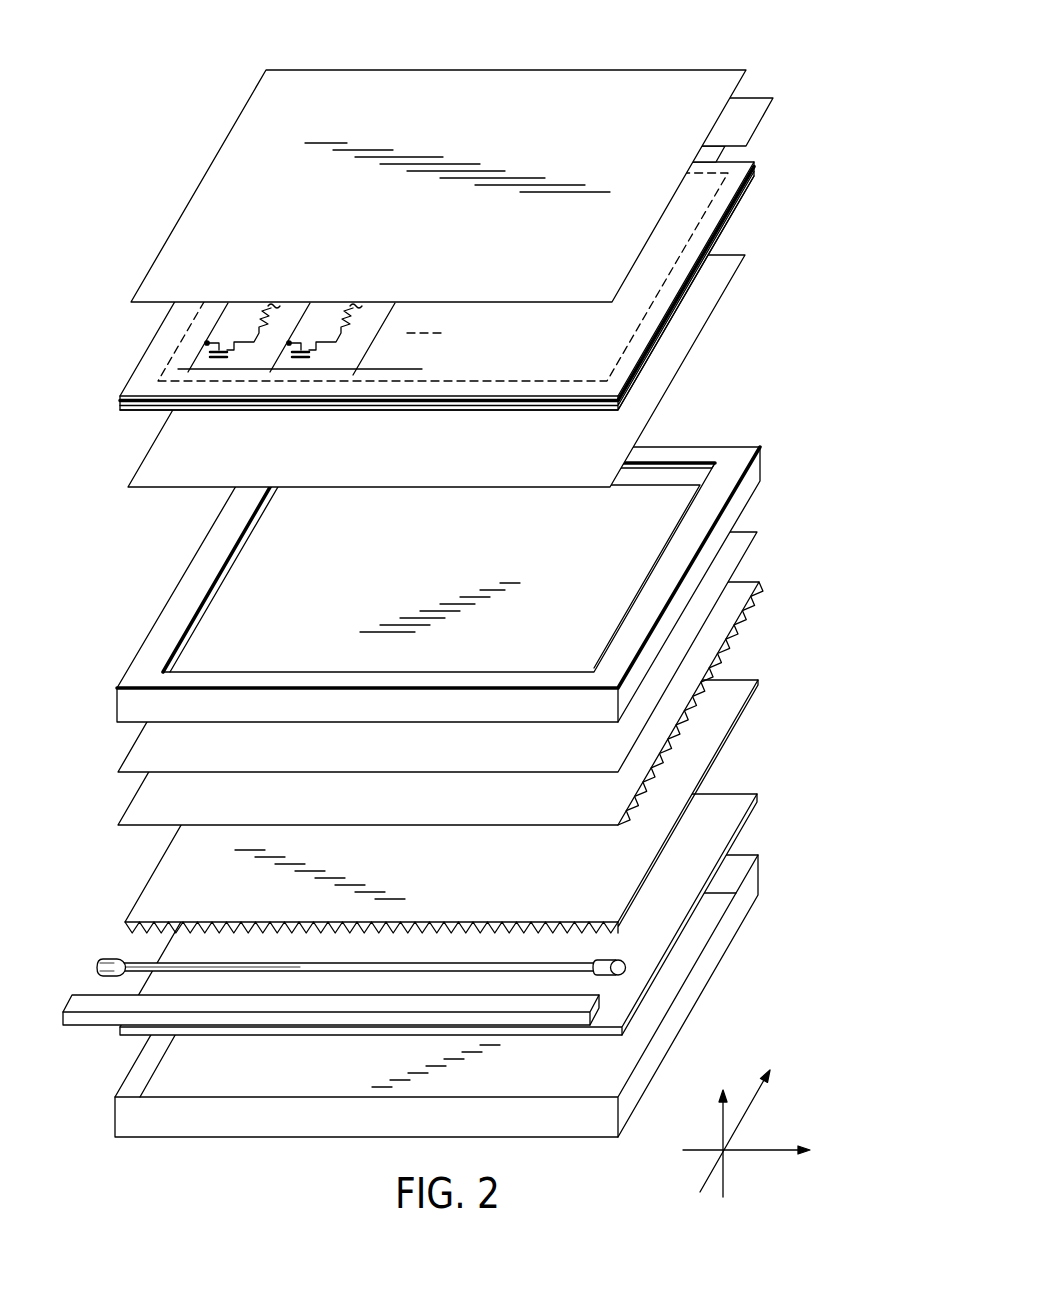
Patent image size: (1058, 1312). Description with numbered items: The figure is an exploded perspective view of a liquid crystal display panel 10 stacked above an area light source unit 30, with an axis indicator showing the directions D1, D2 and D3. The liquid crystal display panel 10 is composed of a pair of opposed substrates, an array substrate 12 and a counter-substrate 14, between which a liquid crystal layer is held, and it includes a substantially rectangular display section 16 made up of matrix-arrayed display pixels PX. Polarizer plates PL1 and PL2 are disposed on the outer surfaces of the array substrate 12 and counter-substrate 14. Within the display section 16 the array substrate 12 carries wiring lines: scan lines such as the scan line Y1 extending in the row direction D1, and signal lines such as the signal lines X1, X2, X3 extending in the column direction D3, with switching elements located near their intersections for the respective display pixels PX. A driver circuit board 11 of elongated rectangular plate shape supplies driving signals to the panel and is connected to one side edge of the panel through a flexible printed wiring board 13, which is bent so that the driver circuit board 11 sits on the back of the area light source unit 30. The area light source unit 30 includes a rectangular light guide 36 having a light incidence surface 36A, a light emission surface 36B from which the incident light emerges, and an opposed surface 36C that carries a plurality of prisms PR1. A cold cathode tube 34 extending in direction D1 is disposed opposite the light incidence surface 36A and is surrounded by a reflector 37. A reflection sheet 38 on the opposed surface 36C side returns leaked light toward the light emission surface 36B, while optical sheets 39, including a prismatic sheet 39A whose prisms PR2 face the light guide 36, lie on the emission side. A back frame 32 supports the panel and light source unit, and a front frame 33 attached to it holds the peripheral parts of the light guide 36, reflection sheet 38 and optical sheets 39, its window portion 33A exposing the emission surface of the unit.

The liquid crystal display panel 10 is at (468, 248).
The driver circuit board 11 is at (752, 98).
The array substrate 12 is at (130, 411).
The flexible printed wiring board 13 is at (713, 155).
The counter-substrate 14 is at (441, 317).
The display section 16 is at (712, 205).
The polarizer plate PL1 is at (665, 358).
The polarizer plate PL2 is at (535, 88).
The signal line X1 is at (215, 312).
The signal line X2 is at (298, 312).
The signal line X3 is at (382, 312).
The scan line Y1 is at (422, 368).
The display pixel PX is at (242, 352).
The area light source unit 30 is at (444, 770).
The back frame 32 is at (705, 962).
The front frame 33 is at (438, 562).
The window portion 33A is at (439, 537).
The cold cathode tube 34 is at (108, 959).
The light guide 36 is at (449, 881).
The light incidence surface 36A is at (371, 1002).
The light emission surface 36B is at (657, 817).
The opposed surface 36C is at (733, 737).
The reflector 37 is at (88, 1003).
The reflection sheet 38 is at (675, 903).
The optical sheets 39 is at (404, 682).
The prismatic sheet 39A is at (427, 703).
The prisms PR1 is at (578, 935).
The prisms PR2 is at (665, 750).
The row direction D1 is at (765, 1150).
The second direction D2 is at (728, 1129).
The column direction D3 is at (745, 1117).